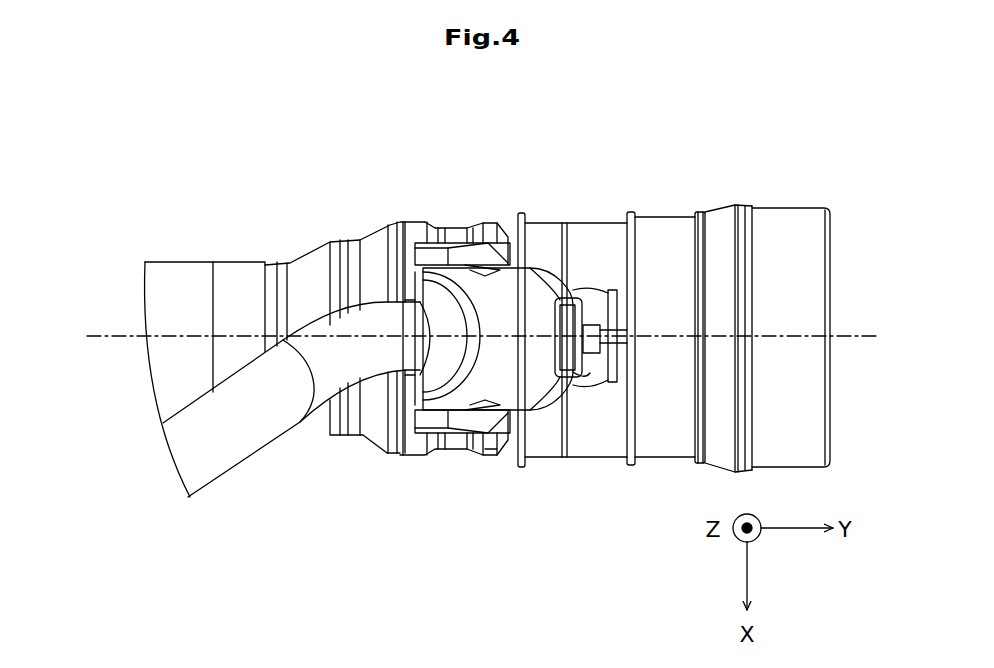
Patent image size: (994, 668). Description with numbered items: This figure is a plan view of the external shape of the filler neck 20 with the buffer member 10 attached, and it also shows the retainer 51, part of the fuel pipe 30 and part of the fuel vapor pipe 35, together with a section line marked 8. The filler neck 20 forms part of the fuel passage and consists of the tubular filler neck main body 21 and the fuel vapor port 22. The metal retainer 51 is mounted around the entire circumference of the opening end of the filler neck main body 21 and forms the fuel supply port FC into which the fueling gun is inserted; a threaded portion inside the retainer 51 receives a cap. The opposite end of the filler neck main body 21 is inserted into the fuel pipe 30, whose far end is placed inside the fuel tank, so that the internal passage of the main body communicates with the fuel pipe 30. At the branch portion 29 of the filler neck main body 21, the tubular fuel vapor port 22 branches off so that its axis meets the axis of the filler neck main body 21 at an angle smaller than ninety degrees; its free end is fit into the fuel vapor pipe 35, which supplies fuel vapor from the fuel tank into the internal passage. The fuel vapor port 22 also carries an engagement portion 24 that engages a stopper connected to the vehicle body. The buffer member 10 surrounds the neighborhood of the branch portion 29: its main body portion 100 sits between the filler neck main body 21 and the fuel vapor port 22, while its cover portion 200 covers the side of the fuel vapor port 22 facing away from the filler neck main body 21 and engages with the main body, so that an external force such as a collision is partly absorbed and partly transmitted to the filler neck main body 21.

The section line VIII-VIII 8 is at (98, 336).
The buffer member 10 is at (440, 131).
The filler neck 20 is at (360, 505).
The filler neck main body 21 is at (485, 451).
The fuel vapor port 22 is at (405, 380).
The engagement portion 24 is at (590, 374).
The branch portion 29 is at (582, 282).
The fuel pipe 30 is at (185, 260).
The fuel vapor pipe 35 is at (245, 462).
The retainer 51 is at (767, 208).
The main body portion 100 is at (449, 235).
The cover portion 200 is at (538, 272).
The fuel supply port FC is at (830, 228).